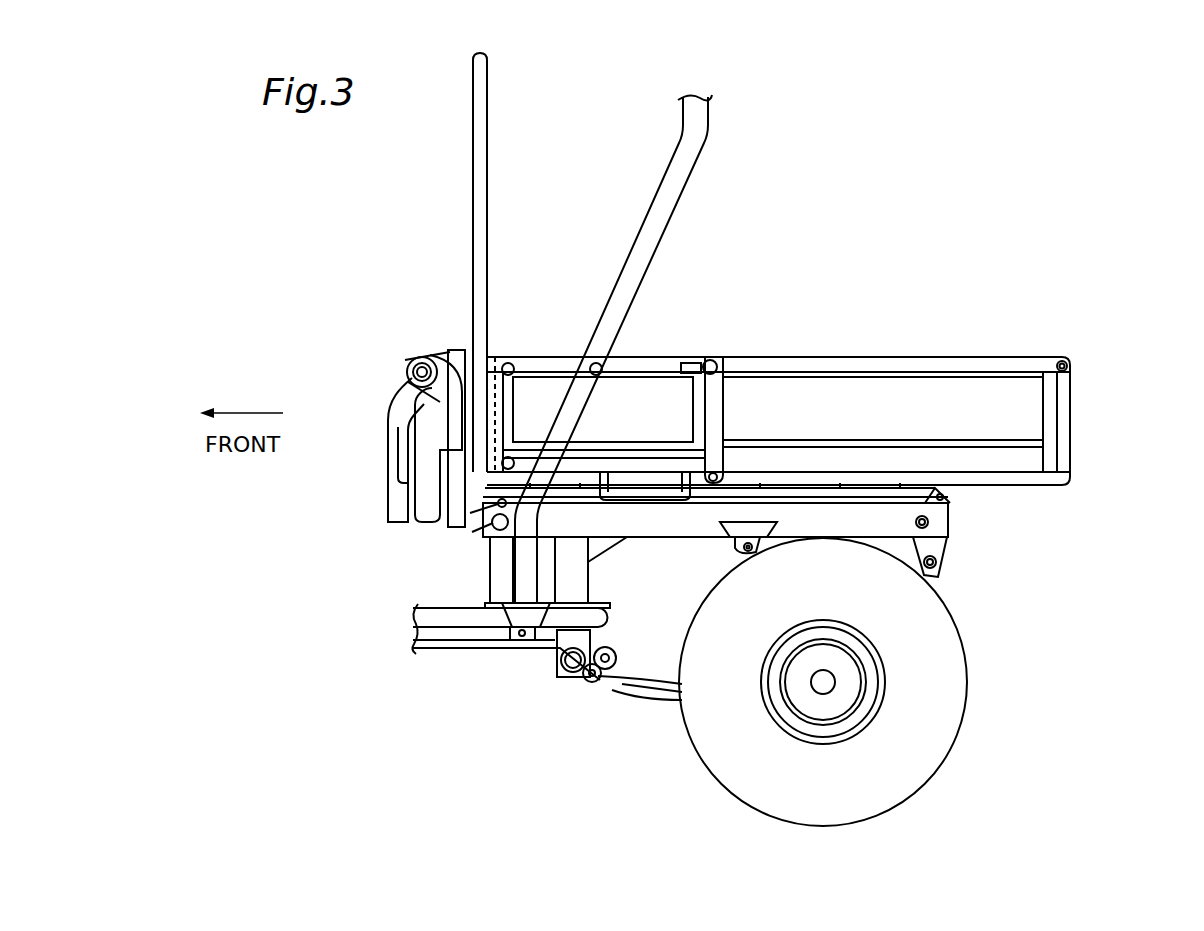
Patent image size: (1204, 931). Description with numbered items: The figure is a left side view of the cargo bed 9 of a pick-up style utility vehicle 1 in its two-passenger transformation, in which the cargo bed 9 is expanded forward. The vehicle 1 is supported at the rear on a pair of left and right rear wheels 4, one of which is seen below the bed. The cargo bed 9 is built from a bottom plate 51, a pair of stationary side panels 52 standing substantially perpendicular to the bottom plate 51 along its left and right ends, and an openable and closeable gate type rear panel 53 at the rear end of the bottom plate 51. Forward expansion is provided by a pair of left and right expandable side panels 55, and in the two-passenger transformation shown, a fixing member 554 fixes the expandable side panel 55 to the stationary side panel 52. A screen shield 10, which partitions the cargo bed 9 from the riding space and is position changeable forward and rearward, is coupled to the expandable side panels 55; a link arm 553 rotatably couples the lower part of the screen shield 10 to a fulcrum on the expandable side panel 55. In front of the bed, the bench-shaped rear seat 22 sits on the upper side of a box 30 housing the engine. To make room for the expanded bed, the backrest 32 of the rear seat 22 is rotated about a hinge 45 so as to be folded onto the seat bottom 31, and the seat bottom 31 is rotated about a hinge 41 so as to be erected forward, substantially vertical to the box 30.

The pick-up style utility vehicle 1 is at (808, 208).
The rear wheel 4 is at (955, 732).
The cargo bed 9 is at (882, 350).
The screen shield 10 is at (487, 103).
The rear seat 22 is at (418, 340).
The box 30 is at (497, 578).
The seat bottom 31 is at (435, 520).
The backrest 32 is at (393, 503).
The hinge 41 is at (485, 528).
The hinge 45 is at (412, 360).
The bottom plate 51 is at (1020, 485).
The stationary side panel 52 is at (985, 370).
The rear panel 53 is at (1072, 412).
The expandable side panel 55 is at (657, 357).
The link arm 553 is at (560, 365).
The fixing member 554 is at (700, 362).